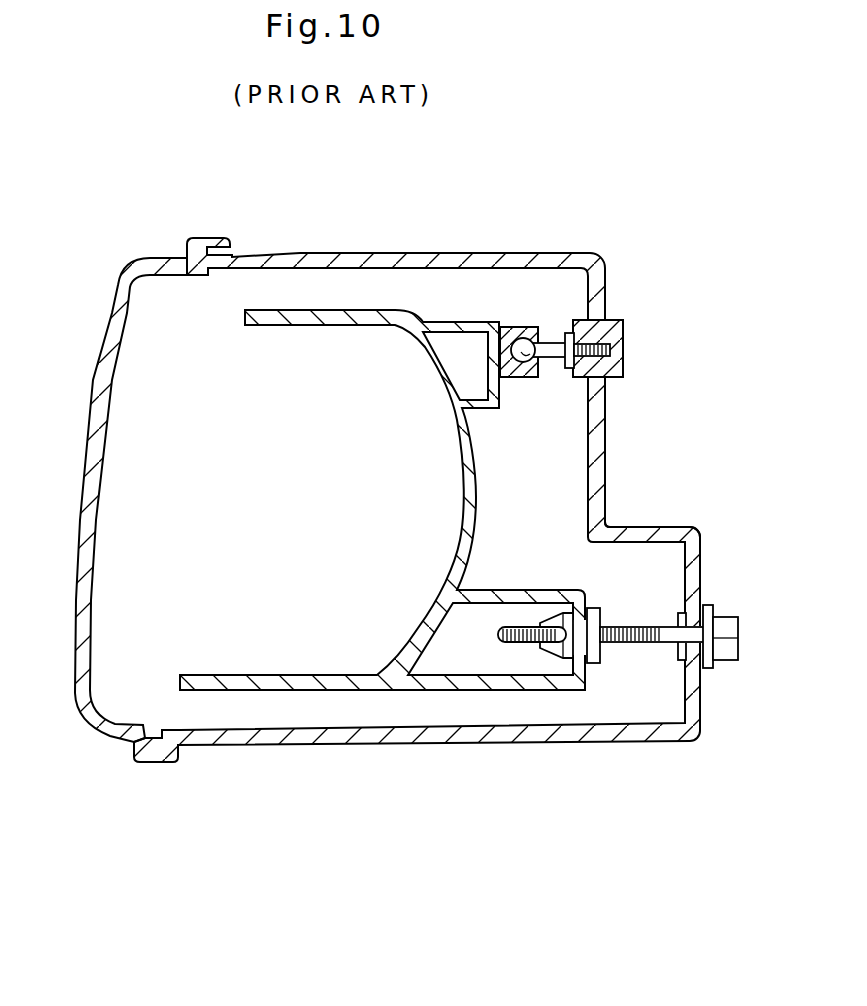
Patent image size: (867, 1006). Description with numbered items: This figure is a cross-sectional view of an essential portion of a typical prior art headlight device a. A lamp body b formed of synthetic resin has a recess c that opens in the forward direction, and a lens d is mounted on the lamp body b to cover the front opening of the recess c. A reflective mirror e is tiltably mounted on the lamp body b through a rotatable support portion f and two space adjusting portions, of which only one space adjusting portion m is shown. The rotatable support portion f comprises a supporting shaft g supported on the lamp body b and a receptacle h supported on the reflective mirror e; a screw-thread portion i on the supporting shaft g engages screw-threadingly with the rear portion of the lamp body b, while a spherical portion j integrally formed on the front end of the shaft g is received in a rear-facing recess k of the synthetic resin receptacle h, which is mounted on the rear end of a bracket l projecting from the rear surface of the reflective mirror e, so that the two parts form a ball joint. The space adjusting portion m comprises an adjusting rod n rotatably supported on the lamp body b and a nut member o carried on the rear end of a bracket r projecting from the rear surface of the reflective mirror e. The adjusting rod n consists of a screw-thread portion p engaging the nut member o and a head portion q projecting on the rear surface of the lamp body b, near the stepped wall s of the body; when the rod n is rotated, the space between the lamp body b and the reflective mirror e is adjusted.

The headlamp unit a is at (583, 180).
The lamp body b is at (328, 258).
The recess c is at (430, 266).
The lens d is at (115, 287).
The reflective mirror e is at (450, 437).
The rotatable support portion f is at (575, 291).
The supporting shaft g is at (550, 358).
The receptacle h is at (525, 332).
The screw-thread portion i is at (591, 346).
The spherical portion j is at (522, 378).
The recess k is at (523, 364).
The bracket l is at (460, 324).
The space adjusting portion m is at (603, 705).
The adjusting rod n is at (633, 624).
The nut member o is at (561, 660).
The screw-thread portion p is at (522, 648).
The head portion q is at (727, 613).
The bracket r is at (505, 594).
The stepped wall s is at (650, 524).